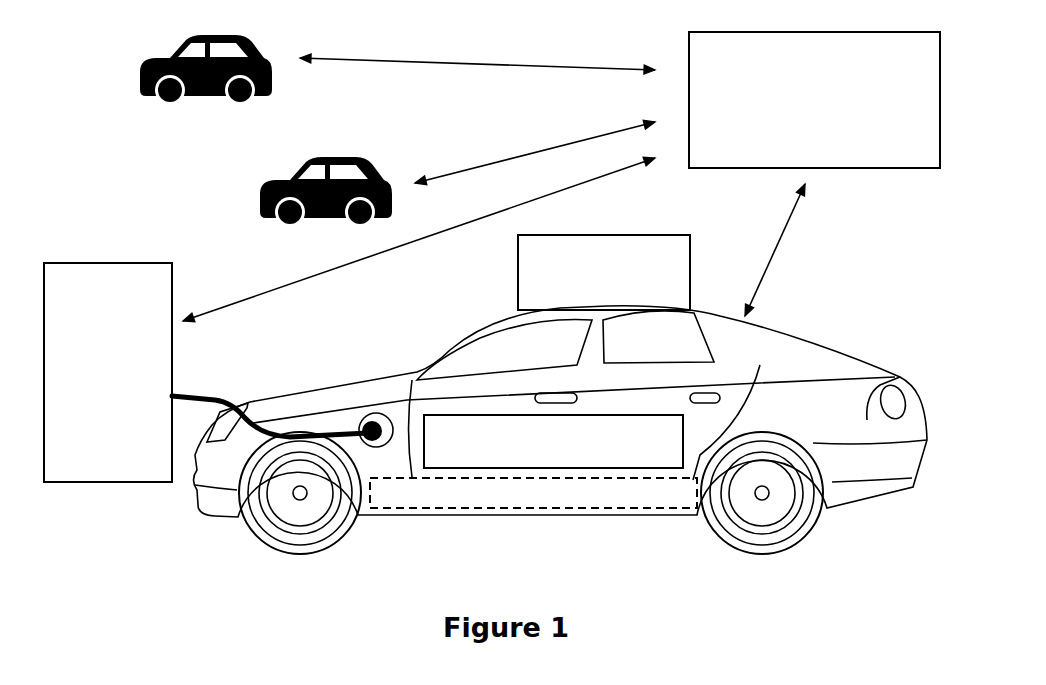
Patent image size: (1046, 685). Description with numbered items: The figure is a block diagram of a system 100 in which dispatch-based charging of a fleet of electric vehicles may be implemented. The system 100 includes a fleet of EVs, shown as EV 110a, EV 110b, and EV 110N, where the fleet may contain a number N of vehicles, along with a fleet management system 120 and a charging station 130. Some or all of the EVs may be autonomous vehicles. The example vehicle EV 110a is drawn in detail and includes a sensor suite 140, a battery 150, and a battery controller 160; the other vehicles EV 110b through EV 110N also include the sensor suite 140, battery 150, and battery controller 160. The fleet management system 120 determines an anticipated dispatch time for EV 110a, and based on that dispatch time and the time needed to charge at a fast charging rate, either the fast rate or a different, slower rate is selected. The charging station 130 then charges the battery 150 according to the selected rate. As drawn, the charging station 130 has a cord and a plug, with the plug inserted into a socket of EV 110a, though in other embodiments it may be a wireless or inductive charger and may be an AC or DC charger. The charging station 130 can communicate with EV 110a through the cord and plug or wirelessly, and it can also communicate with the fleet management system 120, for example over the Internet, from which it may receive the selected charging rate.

The system 100 is at (488, 21).
The EV 110a is at (877, 473).
The EV 110b is at (119, 132).
The EV 110N is at (219, 252).
The fleet management system 120 is at (797, 137).
The charging station 130 is at (92, 410).
The sensor suite 140 is at (586, 298).
The battery 150 is at (585, 503).
The battery controller 160 is at (661, 453).